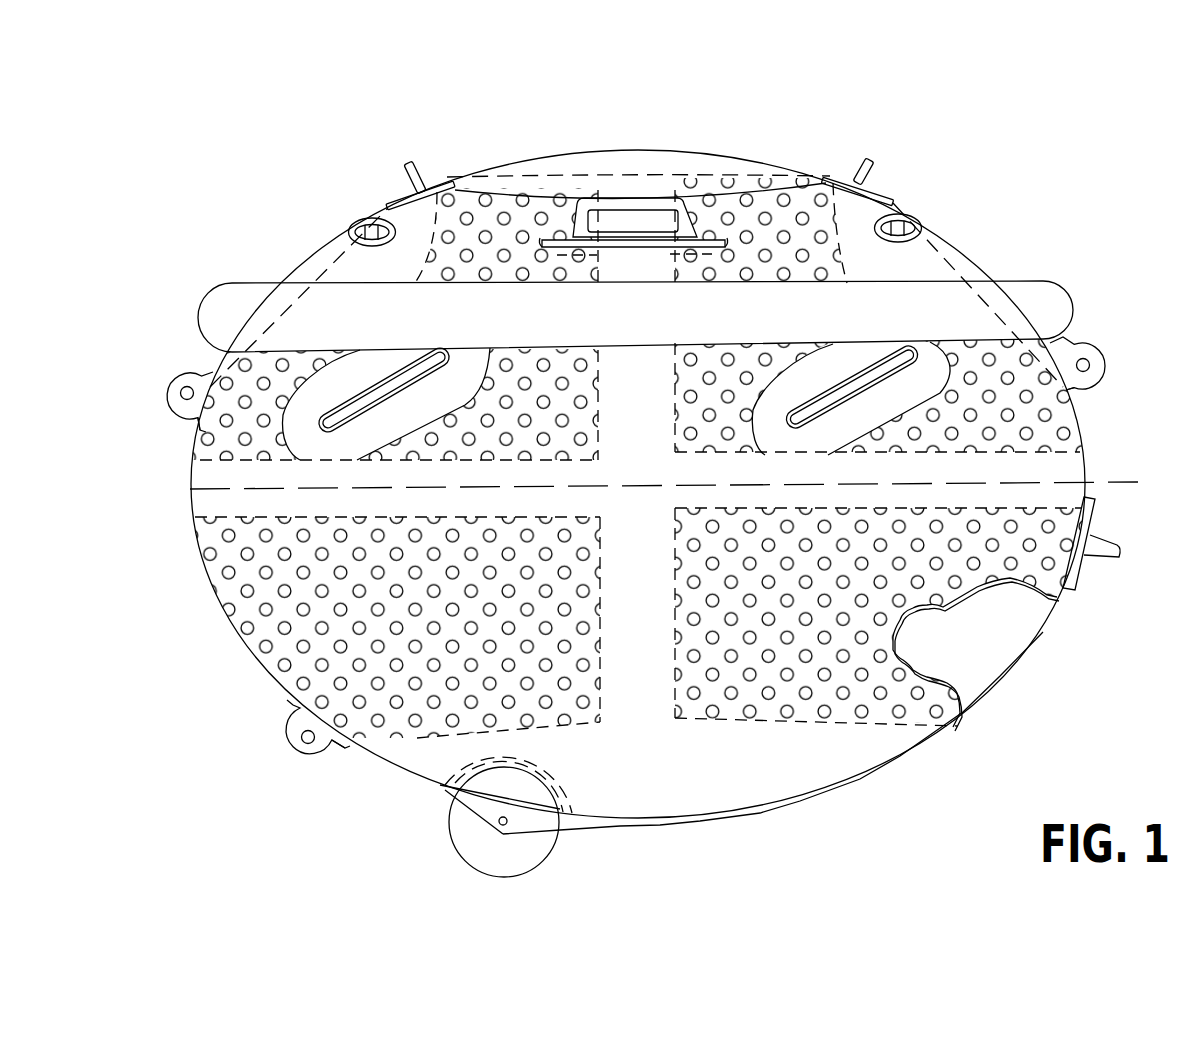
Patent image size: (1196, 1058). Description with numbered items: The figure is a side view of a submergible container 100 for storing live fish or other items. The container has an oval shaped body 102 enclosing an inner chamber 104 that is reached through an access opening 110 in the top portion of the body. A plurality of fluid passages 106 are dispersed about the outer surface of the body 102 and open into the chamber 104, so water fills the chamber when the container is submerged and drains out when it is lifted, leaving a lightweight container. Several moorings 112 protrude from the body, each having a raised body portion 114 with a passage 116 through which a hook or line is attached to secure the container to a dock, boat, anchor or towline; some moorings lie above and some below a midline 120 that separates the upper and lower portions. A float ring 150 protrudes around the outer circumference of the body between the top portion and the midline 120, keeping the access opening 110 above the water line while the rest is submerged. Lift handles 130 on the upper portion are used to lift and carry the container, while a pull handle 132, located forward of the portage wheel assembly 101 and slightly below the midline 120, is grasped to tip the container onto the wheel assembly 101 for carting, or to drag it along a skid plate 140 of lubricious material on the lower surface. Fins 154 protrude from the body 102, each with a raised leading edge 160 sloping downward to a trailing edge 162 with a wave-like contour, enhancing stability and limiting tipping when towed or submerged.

The submergible container 100 is at (639, 479).
The portage wheel assembly 101 is at (557, 851).
The oval shaped body 102 is at (960, 257).
The inner chamber 104 is at (1013, 620).
The fluid passages 106 is at (583, 662).
The access opening 110 is at (660, 152).
The moorings 112 is at (371, 218).
The raised body portion 114 is at (186, 420).
The passage 116 is at (181, 395).
The midline 120 is at (1092, 482).
The lift handles 130 is at (407, 163).
The pull handle 132 is at (1122, 550).
The skid plate 140 is at (902, 752).
The float ring 150 is at (707, 325).
The fins 154 is at (452, 369).
The leading edge 160 is at (450, 356).
The trailing edge 162 is at (325, 430).